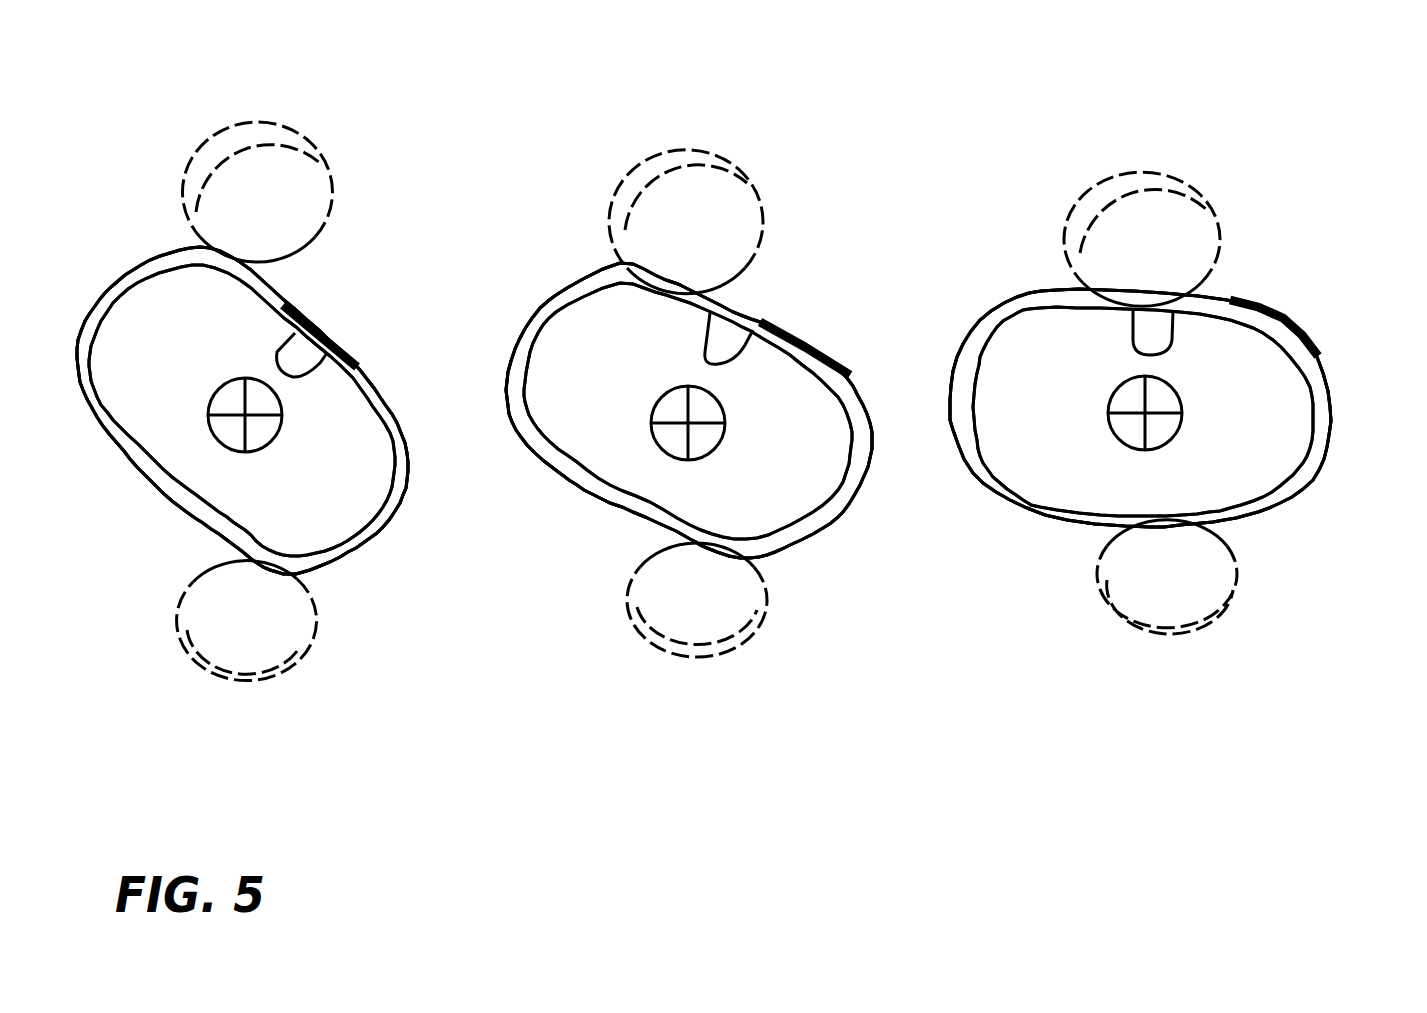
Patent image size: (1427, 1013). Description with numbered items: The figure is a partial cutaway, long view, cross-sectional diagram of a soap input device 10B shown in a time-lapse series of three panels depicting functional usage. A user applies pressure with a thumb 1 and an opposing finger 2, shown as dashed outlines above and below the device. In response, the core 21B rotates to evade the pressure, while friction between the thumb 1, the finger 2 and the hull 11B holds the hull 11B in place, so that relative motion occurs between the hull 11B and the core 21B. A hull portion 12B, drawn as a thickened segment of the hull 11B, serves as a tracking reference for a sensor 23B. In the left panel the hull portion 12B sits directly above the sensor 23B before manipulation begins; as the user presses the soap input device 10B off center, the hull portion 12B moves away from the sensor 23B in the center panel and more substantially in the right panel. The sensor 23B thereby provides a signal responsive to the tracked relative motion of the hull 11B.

The thumb 1 is at (290, 118).
The opposing finger 2 is at (183, 660).
The soap input device 10B is at (387, 163).
The hull 11B is at (150, 483).
The hull portion 12B is at (327, 330).
The core 21B is at (137, 273).
The sensor 23B is at (273, 348).